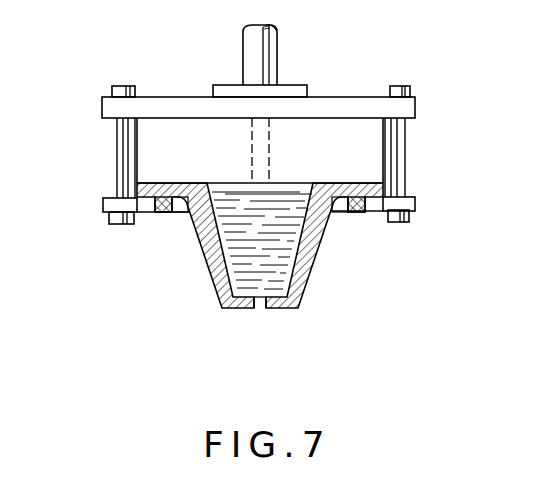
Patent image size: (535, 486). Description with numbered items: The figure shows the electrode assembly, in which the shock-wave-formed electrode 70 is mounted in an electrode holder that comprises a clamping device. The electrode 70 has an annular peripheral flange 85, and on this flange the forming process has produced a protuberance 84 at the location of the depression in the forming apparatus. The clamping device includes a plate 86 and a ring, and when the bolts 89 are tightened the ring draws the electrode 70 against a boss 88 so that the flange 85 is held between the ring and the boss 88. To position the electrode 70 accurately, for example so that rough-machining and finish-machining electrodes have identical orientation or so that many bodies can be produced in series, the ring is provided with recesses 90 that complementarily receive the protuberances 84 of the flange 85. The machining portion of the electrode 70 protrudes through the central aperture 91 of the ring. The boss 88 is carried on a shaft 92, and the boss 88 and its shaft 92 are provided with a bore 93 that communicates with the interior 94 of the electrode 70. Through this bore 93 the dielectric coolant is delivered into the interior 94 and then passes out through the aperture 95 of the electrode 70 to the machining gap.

The electrode 70 is at (303, 298).
The protuberance 84 is at (148, 213).
The annular peripheral flange 85 is at (107, 203).
The plate 86 is at (410, 106).
The boss 88 is at (158, 148).
The bolts 89 is at (120, 135).
The recesses 90 is at (156, 203).
The central aperture 91 is at (260, 150).
The shaft 92 is at (258, 62).
The bore 93 is at (250, 158).
The interior of the electrode 94 is at (226, 270).
The aperture 95 is at (260, 300).